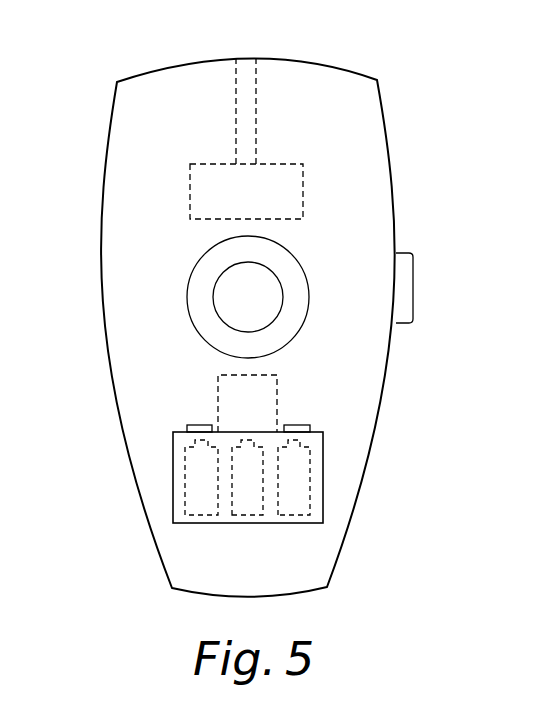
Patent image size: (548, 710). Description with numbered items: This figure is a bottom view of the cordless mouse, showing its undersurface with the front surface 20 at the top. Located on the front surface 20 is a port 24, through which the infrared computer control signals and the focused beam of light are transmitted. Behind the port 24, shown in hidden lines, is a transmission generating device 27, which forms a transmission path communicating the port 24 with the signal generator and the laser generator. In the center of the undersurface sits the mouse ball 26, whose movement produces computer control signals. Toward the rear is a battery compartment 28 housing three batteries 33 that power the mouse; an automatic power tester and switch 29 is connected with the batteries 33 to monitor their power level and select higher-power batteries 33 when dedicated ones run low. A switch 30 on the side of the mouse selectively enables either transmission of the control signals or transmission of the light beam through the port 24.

The front surface 20 is at (313, 60).
The port 24 is at (241, 57).
The mouse ball 26 is at (245, 300).
The transmission generating device 27 is at (303, 178).
The battery compartment 28 is at (323, 497).
The automatic power tester and switch 29 is at (277, 402).
The switch 30 is at (413, 273).
The batteries 33 is at (203, 518).